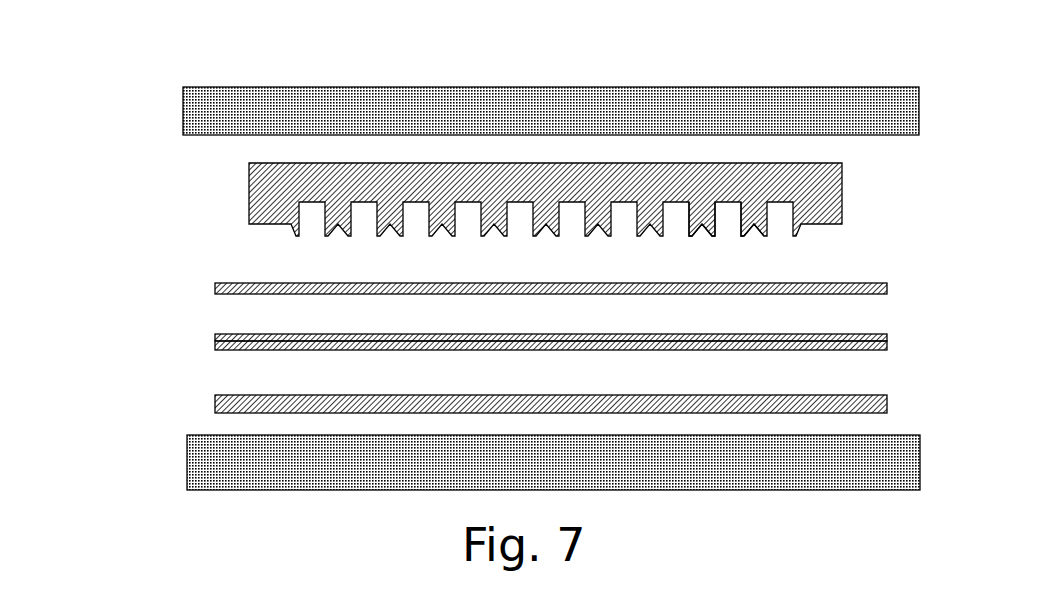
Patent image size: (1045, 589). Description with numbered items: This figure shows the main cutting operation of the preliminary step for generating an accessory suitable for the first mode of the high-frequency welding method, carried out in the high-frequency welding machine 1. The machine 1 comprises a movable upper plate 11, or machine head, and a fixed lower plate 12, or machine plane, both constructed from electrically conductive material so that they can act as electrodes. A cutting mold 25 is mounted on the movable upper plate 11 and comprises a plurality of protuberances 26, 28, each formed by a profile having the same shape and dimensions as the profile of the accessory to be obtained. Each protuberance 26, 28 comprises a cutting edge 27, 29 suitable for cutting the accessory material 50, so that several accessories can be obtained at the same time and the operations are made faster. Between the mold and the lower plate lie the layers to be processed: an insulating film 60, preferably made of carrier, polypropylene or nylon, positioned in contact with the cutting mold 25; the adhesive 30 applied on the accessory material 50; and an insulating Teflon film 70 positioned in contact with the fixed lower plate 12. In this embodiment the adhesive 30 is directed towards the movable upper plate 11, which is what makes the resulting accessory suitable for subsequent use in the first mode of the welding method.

The high-frequency welding machine 1 is at (133, 218).
The movable upper plate 11 is at (205, 110).
The fixed lower plate 12 is at (203, 467).
The cutting mold 25 is at (263, 192).
The protuberance 26 is at (755, 235).
The cutting edge 27 is at (753, 227).
The protuberance 28 is at (697, 222).
The cutting edge 29 is at (713, 233).
The adhesive 30 is at (210, 337).
The accessory material 50 is at (210, 345).
The insulating film 60 is at (210, 289).
The insulating Teflon film 70 is at (210, 403).